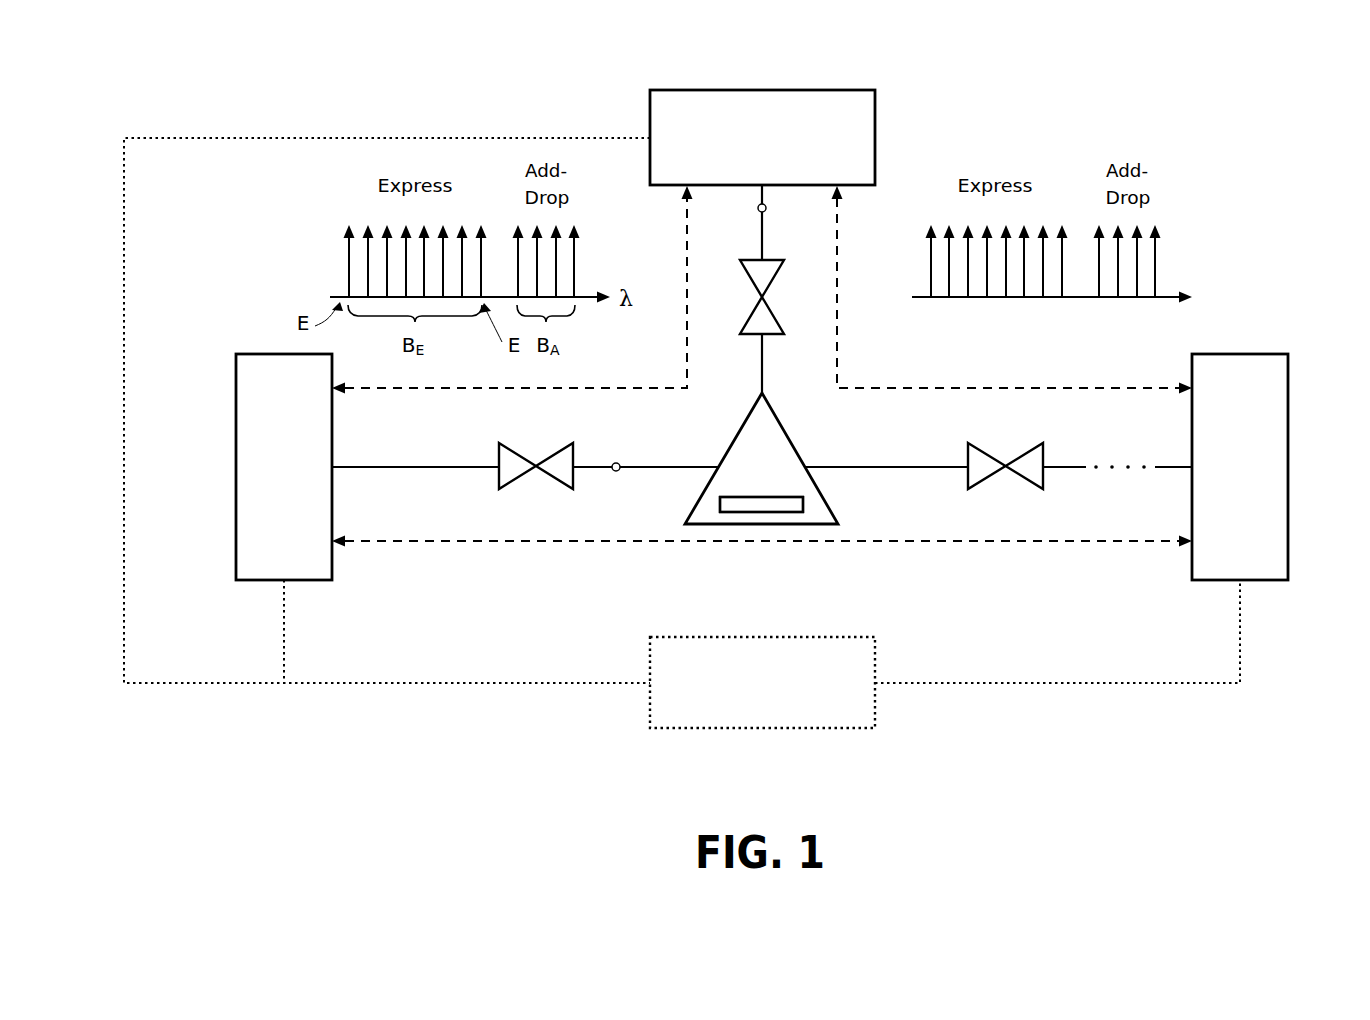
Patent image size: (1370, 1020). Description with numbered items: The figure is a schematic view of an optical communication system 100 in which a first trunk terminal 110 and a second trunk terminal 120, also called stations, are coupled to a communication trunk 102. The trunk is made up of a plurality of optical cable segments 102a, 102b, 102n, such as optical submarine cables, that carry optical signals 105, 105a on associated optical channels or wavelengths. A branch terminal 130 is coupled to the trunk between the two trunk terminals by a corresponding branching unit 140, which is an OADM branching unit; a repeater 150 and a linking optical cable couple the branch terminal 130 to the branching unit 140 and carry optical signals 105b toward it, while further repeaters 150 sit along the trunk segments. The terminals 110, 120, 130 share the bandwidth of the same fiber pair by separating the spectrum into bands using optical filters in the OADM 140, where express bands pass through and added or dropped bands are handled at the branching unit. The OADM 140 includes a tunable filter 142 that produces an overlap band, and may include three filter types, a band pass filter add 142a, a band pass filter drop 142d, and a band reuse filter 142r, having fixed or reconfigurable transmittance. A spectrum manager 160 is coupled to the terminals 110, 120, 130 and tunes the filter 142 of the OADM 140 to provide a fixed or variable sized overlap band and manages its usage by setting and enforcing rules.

The optical communication system 100 is at (1064, 72).
The communication trunk 102 is at (762, 401).
The optical cable segment 102a is at (388, 467).
The optical cable segment 102b is at (853, 467).
The optical cable segment 102n is at (1177, 467).
The optical signals 105 is at (669, 328).
The optical signals 105a is at (613, 465).
The optical signals 105b is at (758, 208).
The first trunk terminal 110 is at (236, 465).
The second trunk terminal 120 is at (1288, 465).
The branch terminal 130 is at (758, 88).
The branching unit 140 is at (823, 502).
The tunable filter 142 is at (841, 554).
The band pass filter add (BPF-A) 142a is at (761, 504).
The band pass filter drop (BPF-D) 142d is at (761, 504).
The band reuse filter (BRF) 142r is at (803, 505).
The repeater 150 is at (536, 467).
The spectrum manager 160 is at (765, 732).